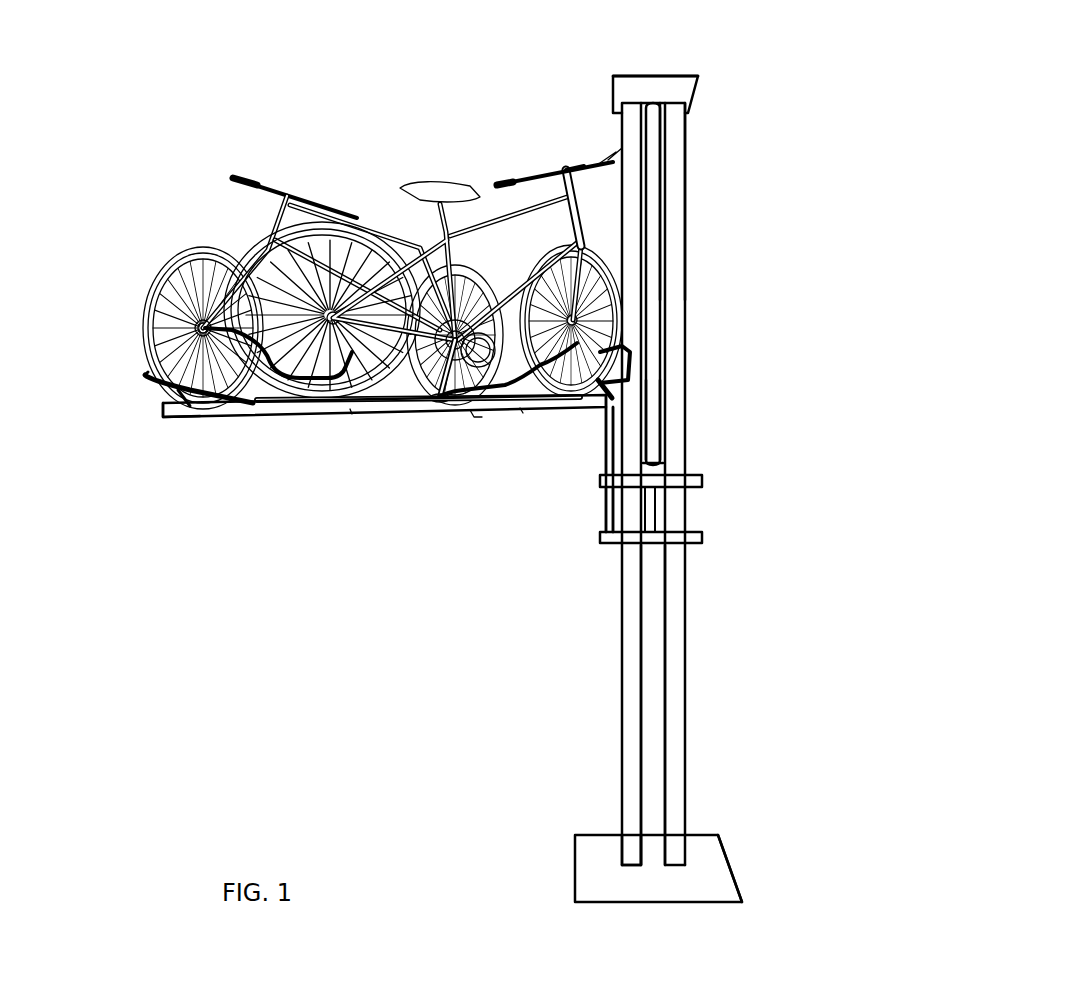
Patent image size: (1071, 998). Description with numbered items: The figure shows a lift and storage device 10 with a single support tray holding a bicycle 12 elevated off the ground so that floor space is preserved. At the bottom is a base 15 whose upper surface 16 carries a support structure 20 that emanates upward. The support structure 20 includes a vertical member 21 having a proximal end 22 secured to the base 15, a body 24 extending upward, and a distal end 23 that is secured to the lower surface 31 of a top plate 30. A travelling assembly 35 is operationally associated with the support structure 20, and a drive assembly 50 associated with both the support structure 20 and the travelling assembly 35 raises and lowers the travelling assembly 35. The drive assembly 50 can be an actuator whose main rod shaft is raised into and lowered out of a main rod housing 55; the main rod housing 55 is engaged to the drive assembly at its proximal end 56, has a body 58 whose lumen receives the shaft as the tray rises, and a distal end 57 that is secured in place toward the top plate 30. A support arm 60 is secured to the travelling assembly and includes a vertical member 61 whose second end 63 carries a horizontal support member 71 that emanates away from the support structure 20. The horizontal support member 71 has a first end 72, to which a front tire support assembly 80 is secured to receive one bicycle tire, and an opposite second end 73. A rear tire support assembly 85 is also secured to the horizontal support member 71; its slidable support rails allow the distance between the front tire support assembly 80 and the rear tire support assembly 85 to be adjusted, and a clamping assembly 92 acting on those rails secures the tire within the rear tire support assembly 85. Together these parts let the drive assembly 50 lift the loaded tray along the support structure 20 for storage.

The lift and storage device 10 is at (795, 72).
The bicycle 12 is at (292, 188).
The base 15 is at (690, 877).
The upper surface 16 is at (725, 892).
The support structure 20 is at (636, 679).
The vertical member 21 is at (636, 773).
The proximal end 22 is at (634, 836).
The distal end 23 is at (680, 115).
The body 24 is at (636, 626).
The top plate 30 is at (658, 77).
The lower surface 31 is at (663, 93).
The travelling assembly 35 is at (657, 510).
The drive assembly 50 is at (662, 463).
The main rod housing 55 is at (653, 407).
The proximal end 56 is at (655, 445).
The slot 57 is at (656, 124).
The body 58 is at (653, 285).
The support arm 60 is at (613, 503).
The vertical member 61 is at (613, 455).
The second end 63 is at (605, 417).
The horizontal support member 71 is at (322, 408).
The first end 72 is at (570, 402).
The second end 73 is at (182, 408).
The front tire support assembly 80 is at (623, 388).
The rear tire support assembly 85 is at (173, 387).
The clamping assembly 92 is at (203, 328).